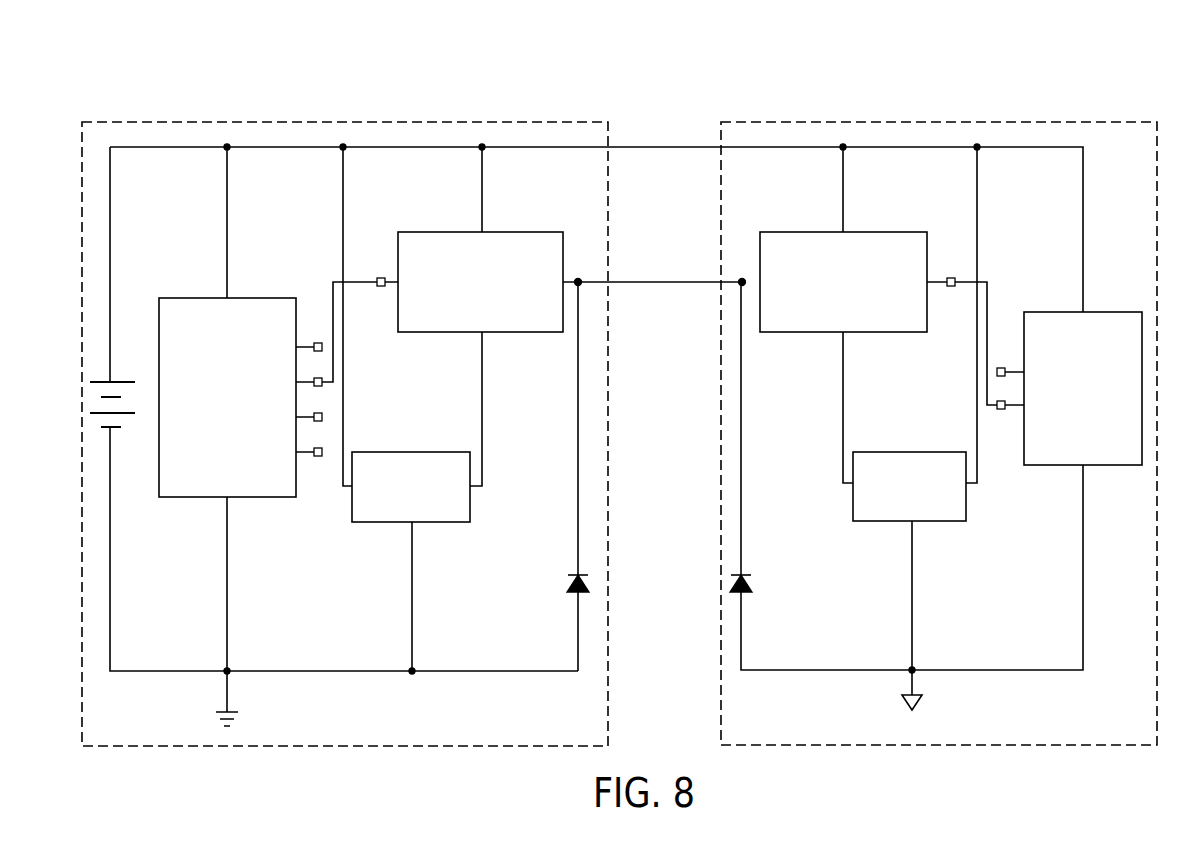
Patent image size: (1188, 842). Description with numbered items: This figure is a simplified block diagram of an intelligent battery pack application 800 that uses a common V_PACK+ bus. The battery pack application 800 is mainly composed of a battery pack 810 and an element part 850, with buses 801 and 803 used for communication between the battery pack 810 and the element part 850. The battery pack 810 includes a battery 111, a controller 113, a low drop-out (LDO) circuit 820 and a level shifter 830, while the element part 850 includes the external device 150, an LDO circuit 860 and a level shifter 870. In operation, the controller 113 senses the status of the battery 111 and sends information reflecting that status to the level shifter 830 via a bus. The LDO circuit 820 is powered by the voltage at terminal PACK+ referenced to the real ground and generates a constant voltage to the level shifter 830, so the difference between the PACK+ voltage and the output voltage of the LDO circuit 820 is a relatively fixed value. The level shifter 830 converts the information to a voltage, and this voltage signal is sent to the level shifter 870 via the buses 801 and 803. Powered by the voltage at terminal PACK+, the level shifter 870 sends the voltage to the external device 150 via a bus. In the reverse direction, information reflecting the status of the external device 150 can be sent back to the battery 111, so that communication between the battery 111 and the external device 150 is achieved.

The intelligent battery pack application 800 is at (190, 96).
The battery pack 810 is at (513, 122).
The element part 850 is at (1058, 122).
The battery 111 is at (112, 381).
The controller 113 is at (240, 497).
The level shifter 830 is at (487, 333).
The low drop-out (LDO) circuit 820 is at (423, 451).
The bus 801 is at (593, 267).
The bus 803 is at (753, 266).
The level shifter 870 is at (862, 333).
The LDO circuit 860 is at (922, 451).
The external device 150 is at (1073, 467).